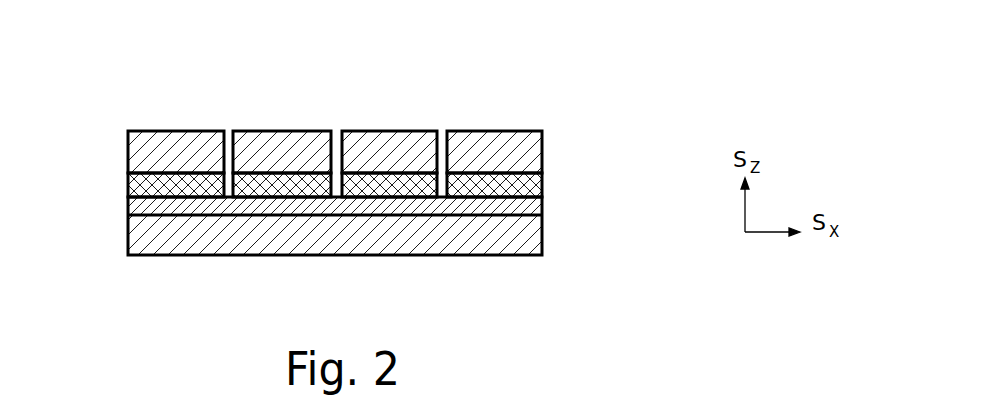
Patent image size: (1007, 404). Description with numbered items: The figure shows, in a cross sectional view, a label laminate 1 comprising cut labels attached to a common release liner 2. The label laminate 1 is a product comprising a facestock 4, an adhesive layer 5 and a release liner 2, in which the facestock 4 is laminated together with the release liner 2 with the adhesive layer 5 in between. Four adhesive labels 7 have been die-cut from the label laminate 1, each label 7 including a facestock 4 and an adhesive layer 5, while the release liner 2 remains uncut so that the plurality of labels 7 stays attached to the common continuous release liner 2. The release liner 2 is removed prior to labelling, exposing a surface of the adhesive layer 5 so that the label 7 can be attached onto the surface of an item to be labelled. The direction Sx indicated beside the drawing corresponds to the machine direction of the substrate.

The label laminate 1 is at (335, 152).
The release liner 2 is at (115, 195).
The facestock 4 is at (350, 113).
The adhesive layer 5 is at (545, 188).
The adhesive label 7 is at (170, 130).